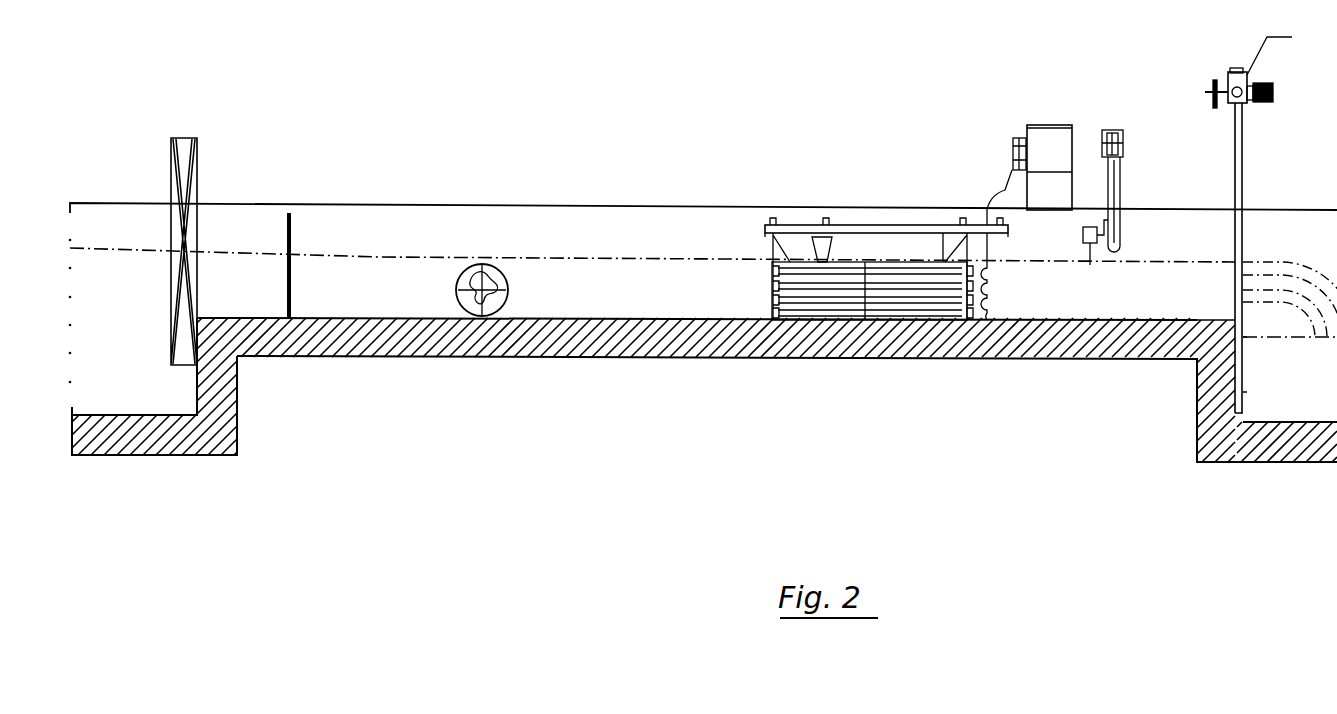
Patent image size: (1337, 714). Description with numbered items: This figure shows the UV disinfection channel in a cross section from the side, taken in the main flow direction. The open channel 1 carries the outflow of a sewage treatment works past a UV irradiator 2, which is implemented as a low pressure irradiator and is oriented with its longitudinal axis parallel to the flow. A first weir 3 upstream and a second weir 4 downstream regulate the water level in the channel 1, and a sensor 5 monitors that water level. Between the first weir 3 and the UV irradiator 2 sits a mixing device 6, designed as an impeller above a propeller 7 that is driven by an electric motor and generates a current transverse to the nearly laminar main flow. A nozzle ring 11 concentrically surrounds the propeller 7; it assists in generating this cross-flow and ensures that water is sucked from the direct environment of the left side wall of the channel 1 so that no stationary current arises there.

The channel 1 is at (578, 288).
The UV irradiator 2 is at (914, 297).
The first weir 3 is at (291, 357).
The second weir 4 is at (1232, 295).
The sensor 5 is at (1122, 247).
The mixing device 6 is at (505, 274).
The propeller 7 is at (482, 316).
The nozzle ring 11 is at (507, 298).